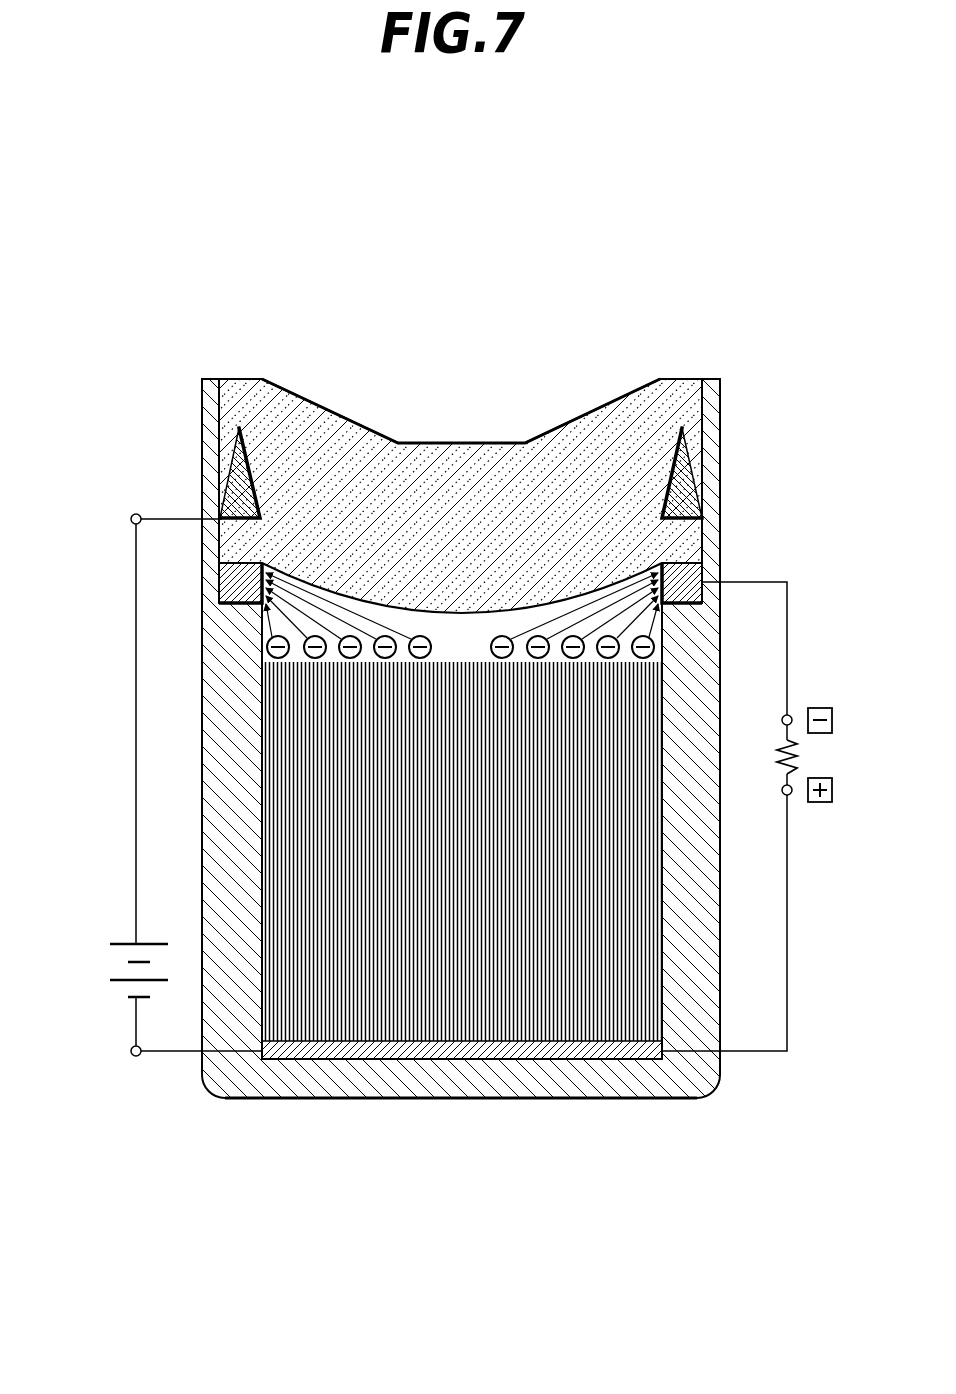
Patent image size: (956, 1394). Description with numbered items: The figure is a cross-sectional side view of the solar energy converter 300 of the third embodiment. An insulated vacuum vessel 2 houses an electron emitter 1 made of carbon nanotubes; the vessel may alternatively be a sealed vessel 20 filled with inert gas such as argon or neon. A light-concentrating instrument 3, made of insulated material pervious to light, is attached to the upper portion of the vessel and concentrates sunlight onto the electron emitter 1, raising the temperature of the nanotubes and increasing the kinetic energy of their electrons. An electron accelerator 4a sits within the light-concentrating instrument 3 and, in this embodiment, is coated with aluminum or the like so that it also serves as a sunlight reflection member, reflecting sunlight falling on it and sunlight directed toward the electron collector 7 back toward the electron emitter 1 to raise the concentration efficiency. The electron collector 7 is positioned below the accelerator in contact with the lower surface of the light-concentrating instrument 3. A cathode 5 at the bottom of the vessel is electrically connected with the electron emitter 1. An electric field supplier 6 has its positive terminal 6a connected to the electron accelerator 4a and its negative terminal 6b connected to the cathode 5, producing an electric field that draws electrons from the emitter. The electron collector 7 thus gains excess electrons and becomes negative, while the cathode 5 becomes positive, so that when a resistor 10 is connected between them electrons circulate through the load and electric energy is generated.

The solar energy converter 300 is at (440, 244).
The electron emitter 1 is at (327, 1062).
The vacuum vessel 2 is at (462, 931).
The sealed vessel 20 is at (462, 851).
The light-concentrating instrument 3 is at (455, 453).
The electron accelerator 4a is at (230, 465).
The cathode 5 is at (488, 1062).
The electric field supplier 6 is at (108, 967).
The positive terminal 6a is at (130, 520).
The negative terminal 6b is at (130, 1052).
The electron collector 7 is at (220, 568).
The resistor 10 is at (802, 757).